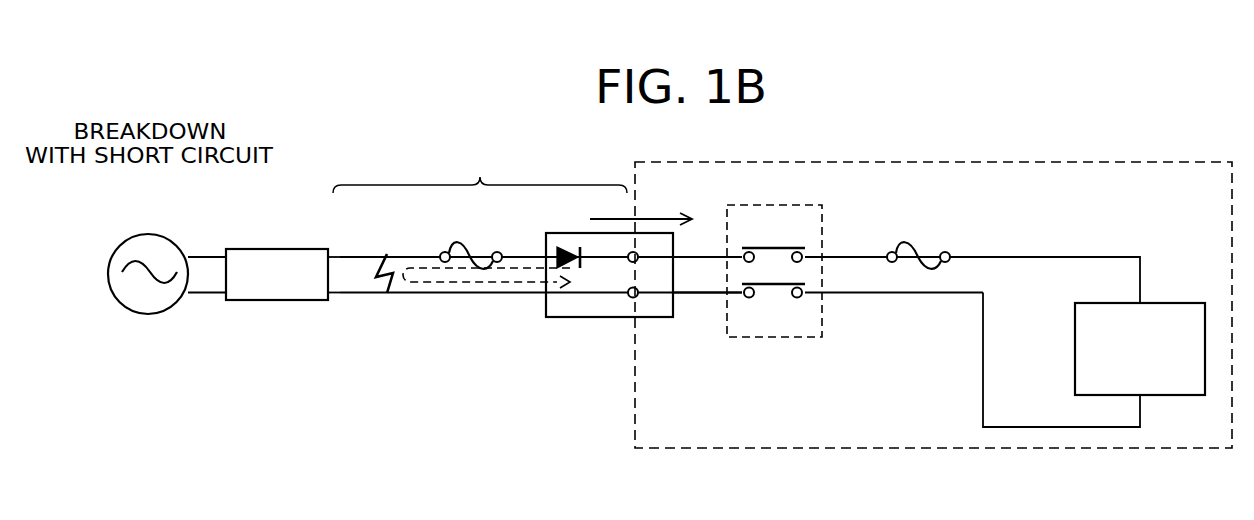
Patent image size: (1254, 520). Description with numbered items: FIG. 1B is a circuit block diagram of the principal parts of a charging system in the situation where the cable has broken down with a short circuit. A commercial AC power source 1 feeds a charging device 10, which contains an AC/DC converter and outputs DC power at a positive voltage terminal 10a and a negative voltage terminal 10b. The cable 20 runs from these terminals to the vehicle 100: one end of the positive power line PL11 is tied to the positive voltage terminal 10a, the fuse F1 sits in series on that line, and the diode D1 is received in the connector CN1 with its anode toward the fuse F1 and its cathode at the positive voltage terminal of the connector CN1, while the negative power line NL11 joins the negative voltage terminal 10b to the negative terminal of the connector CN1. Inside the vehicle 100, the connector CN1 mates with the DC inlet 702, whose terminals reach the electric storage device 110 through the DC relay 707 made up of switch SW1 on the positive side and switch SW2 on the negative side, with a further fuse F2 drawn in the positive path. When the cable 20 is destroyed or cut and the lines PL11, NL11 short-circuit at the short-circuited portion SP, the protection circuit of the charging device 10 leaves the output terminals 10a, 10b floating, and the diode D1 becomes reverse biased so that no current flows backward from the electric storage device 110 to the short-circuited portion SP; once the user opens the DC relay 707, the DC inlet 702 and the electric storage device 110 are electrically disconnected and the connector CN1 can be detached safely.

The commercial AC power source 1 is at (148, 234).
The charging device 10 is at (281, 247).
The positive voltage terminal 10a is at (332, 251).
The negative voltage terminal 10b is at (330, 300).
The cable 20 is at (480, 170).
The positive power line PL11 is at (392, 253).
The negative power line NL11 is at (463, 293).
The short-circuited portion SP is at (395, 293).
The fuse F1 is at (458, 242).
The diode D1 is at (565, 247).
The connector CN1 is at (588, 318).
The DC inlet 702 is at (660, 318).
The DC relay 707 is at (765, 204).
The switch SW1 is at (775, 247).
The switch SW2 is at (774, 287).
The fuse F2 is at (907, 242).
The vehicle 100 is at (1080, 158).
The electric storage device 110 is at (1172, 302).